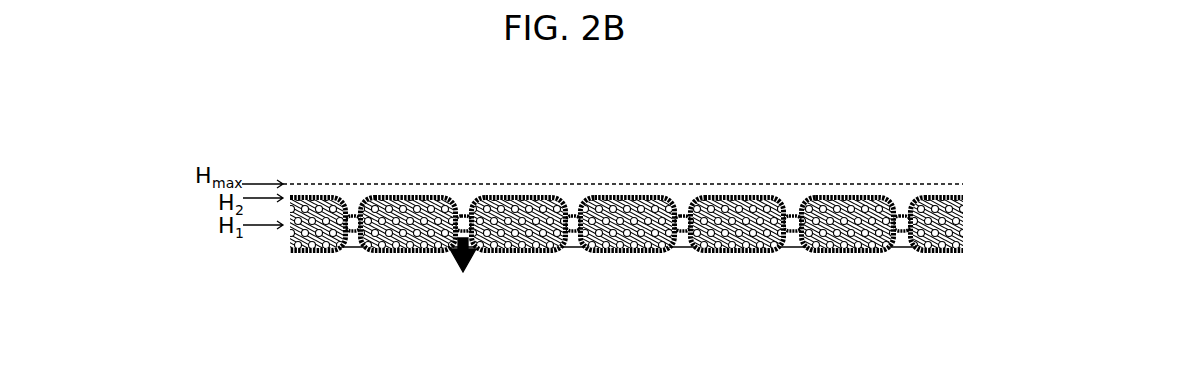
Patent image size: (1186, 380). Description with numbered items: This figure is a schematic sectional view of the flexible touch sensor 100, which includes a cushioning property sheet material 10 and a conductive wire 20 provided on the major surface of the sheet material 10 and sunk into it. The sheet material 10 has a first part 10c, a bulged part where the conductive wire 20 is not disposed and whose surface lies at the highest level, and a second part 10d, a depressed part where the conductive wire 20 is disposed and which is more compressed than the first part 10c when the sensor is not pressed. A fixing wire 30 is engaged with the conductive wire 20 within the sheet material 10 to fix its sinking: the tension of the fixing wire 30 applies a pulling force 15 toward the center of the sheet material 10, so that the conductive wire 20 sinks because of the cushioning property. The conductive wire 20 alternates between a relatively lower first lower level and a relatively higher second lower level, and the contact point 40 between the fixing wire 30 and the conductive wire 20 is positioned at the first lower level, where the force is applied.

The flexible touch sensor 100 is at (800, 121).
The cushioning property sheet material 10 is at (642, 195).
The first part 10c is at (886, 185).
The second part 10d is at (850, 196).
The force 15 is at (457, 265).
The conductive wire 20 is at (557, 195).
The fixing wire 30 is at (572, 249).
The contact point 40 is at (356, 204).